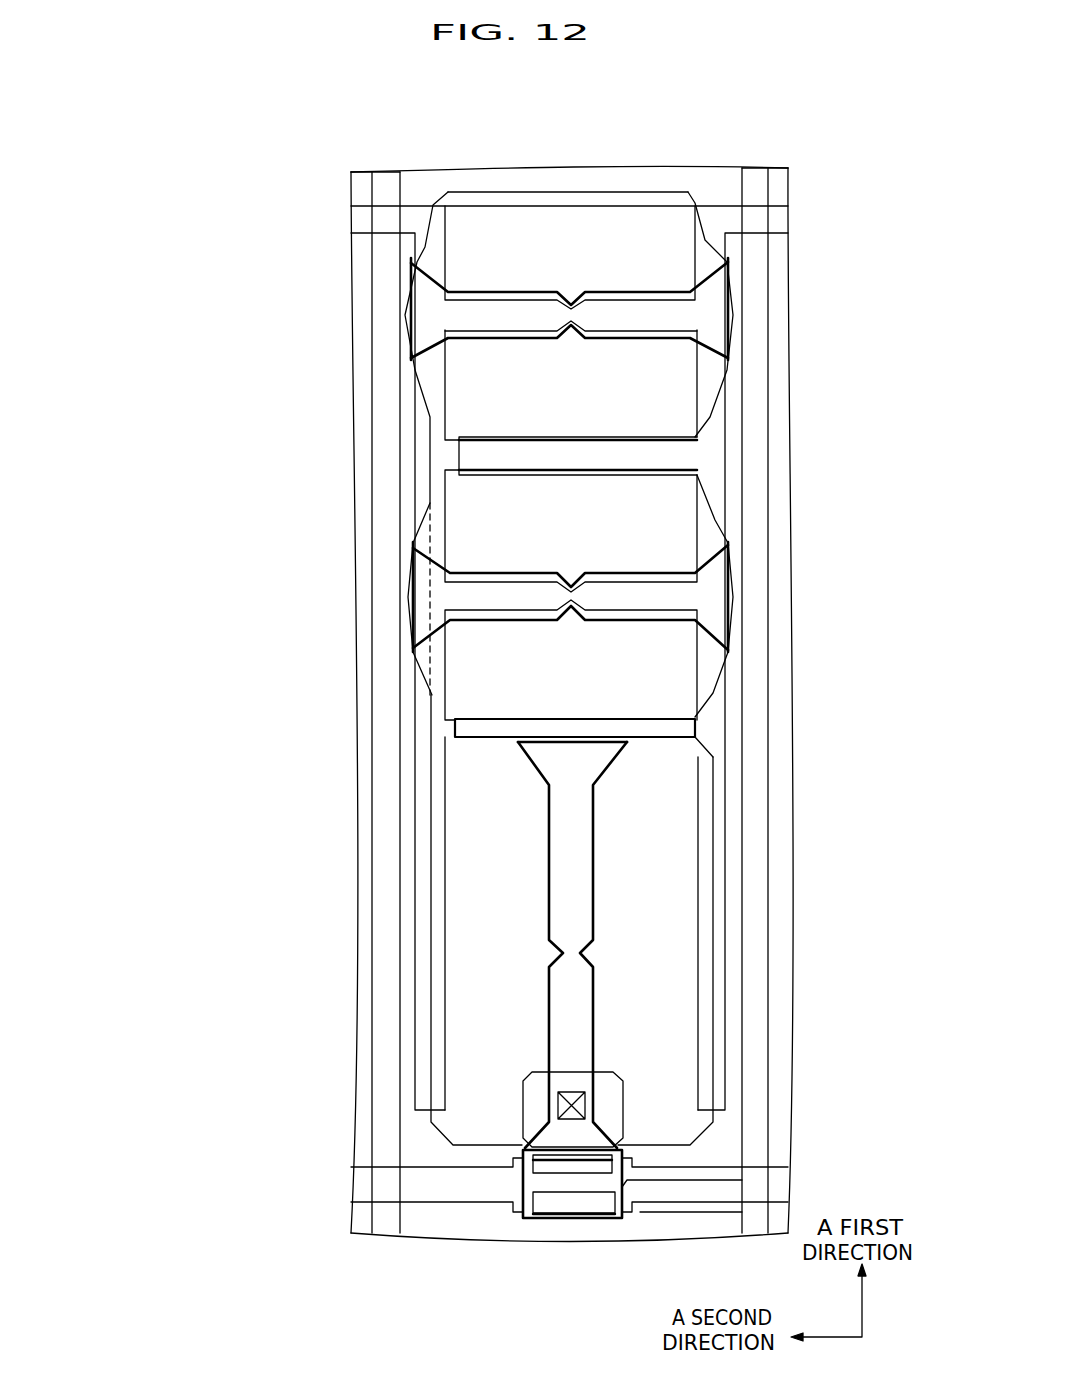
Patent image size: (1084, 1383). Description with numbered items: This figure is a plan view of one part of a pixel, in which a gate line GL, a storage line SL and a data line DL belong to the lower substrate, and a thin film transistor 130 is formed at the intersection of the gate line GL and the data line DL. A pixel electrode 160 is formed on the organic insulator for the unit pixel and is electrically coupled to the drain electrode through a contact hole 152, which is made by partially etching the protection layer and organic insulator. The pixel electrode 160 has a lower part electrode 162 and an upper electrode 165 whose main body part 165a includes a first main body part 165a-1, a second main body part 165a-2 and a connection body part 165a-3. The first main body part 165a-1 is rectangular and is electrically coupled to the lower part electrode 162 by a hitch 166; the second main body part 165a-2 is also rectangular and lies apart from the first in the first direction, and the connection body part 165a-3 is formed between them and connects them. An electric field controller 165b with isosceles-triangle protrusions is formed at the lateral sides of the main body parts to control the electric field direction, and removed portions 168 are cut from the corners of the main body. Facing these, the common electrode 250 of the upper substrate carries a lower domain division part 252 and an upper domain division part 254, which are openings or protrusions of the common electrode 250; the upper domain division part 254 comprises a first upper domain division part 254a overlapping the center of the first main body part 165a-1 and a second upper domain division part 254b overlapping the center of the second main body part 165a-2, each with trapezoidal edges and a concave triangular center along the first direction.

The common electrode 250 is at (548, 234).
The storage line SL is at (362, 219).
The data line DL is at (760, 890).
The gate line GL is at (442, 1188).
The upper domain division part 254 is at (672, 455).
The first upper domain division part 254a is at (645, 597).
The second upper domain division part 254b is at (657, 332).
The lower domain division part 252 is at (587, 1005).
The organic layer / insulating pattern 165 is at (410, 520).
The main body part 165a is at (438, 456).
The first main body part 165a-1 is at (468, 532).
The second main body part 165a-2 is at (468, 383).
The connection body part 165a-3 is at (452, 457).
The second pattern portion 165b is at (425, 615).
The hitch 166 is at (453, 728).
The pixel electrode 160 is at (426, 689).
The lower part electrode 162 is at (462, 990).
The removed portion 168 is at (440, 1138).
The thin film transistor 130 is at (557, 1222).
The contact hole 152 is at (580, 1122).